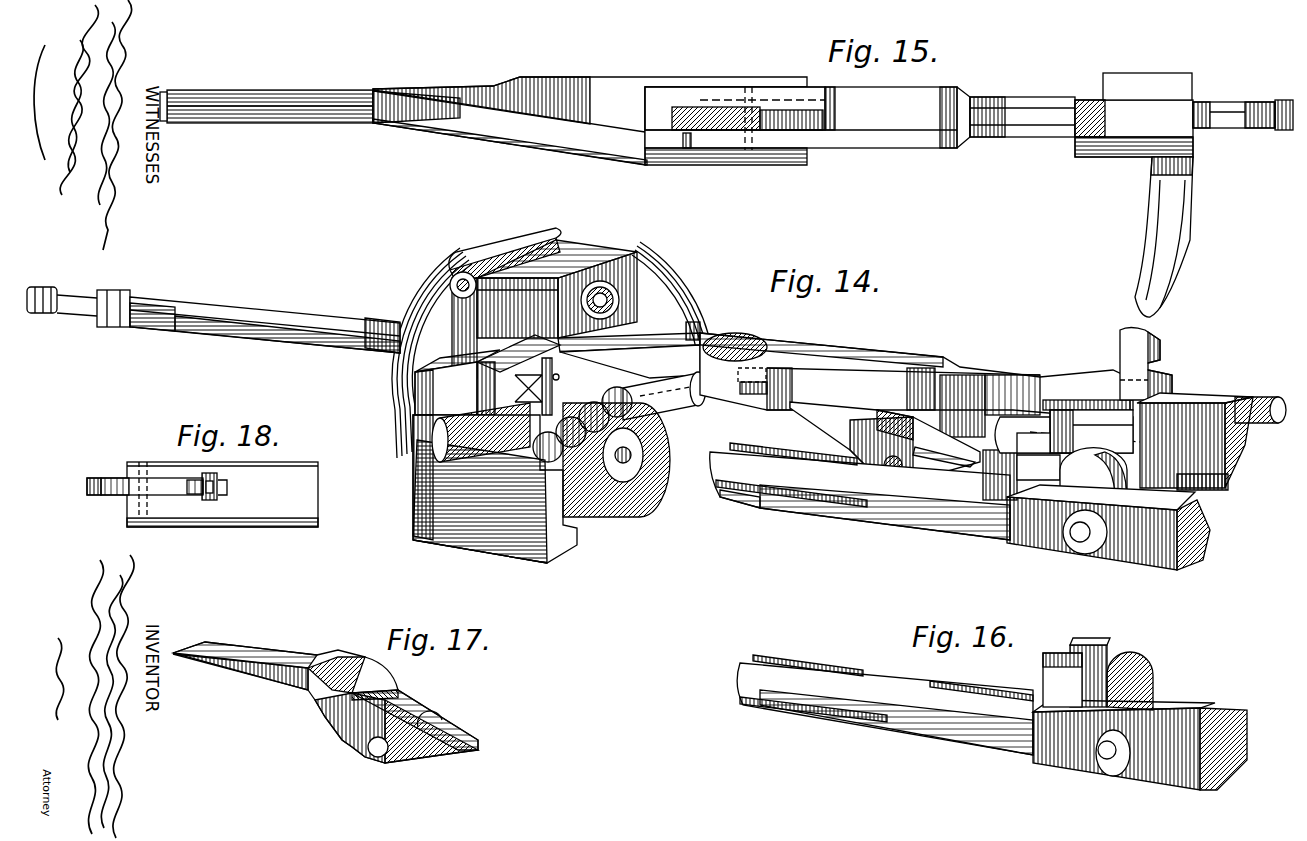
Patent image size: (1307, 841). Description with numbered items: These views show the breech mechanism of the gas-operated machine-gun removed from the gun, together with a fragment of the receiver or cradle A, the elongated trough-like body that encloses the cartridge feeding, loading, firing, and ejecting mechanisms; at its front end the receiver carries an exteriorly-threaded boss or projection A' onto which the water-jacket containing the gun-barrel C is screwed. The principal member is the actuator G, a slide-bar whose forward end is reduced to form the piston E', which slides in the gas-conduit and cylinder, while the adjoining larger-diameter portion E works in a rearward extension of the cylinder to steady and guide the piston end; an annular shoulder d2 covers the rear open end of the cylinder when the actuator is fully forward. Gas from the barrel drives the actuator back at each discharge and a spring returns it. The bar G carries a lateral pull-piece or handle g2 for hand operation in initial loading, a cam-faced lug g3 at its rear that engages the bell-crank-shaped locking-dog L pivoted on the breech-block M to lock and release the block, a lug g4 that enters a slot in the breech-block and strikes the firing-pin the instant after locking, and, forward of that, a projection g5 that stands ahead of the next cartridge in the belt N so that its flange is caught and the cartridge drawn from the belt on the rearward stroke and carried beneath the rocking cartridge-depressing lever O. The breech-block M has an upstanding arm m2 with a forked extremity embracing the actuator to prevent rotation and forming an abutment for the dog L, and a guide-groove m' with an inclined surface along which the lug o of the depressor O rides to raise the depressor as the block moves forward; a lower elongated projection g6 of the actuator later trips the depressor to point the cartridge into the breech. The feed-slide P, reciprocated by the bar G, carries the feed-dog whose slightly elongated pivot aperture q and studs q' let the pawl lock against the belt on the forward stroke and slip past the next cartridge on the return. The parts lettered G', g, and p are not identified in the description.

In FIG. 15, the adjoining guide portion of the actuator E is at (266, 92).
In FIG. 14, the adjoining guide portion of the actuator E is at (265, 313).
In FIG. 14, the piston E' is at (63, 289).
In FIG. 14, the annular shoulder d2 is at (103, 318).
In FIG. 15, the actuator G is at (590, 104).
In FIG. 14, the actuator G is at (915, 375).
In FIG. 14, the barrel socket G' is at (381, 321).
In FIG. 14, the receiver A is at (552, 350).
In FIG. 14, the threaded boss A' is at (518, 303).
In FIG. 14, the feed-slide P is at (690, 318).
In FIG. 18, the feed-slide P is at (297, 478).
In FIG. 15, the rod end g is at (1283, 108).
In FIG. 14, the rod end g is at (1245, 422).
In FIG. 15, the pull-piece or handle g2 is at (1191, 220).
In FIG. 15, the cam-faced lug g3 is at (1228, 118).
In FIG. 14, the cam-faced lug g3 is at (1225, 490).
In FIG. 15, the lug or projection g4 is at (1033, 112).
In FIG. 14, the lug or projection g4 is at (1008, 435).
In FIG. 15, the projection g5 is at (670, 140).
In FIG. 14, the projection g5 is at (715, 338).
In FIG. 14, the lower elongated projection g6 is at (760, 402).
In FIG. 14, the cartridge-belt N is at (417, 490).
In FIG. 14, the gun-barrel C is at (626, 478).
In FIG. 14, the breech-block M is at (923, 520).
In FIG. 16, the breech-block M is at (937, 740).
In FIG. 14, the guide-groove m' is at (793, 444).
In FIG. 16, the guide-groove m' is at (808, 657).
In FIG. 14, the upstanding arm m2 is at (1040, 440).
In FIG. 16, the upstanding arm m2 is at (1107, 662).
In FIG. 14, the locking-dog L is at (1203, 552).
In FIG. 16, the locking-dog L is at (1163, 715).
In FIG. 14, the cartridge-depressor O is at (840, 414).
In FIG. 17, the cartridge-depressor O is at (325, 691).
In FIG. 17, the lug o is at (322, 670).
In FIG. 18, the aperture q is at (129, 493).
In FIG. 18, the stud q' is at (178, 501).
In FIG. 18, the bracket p is at (220, 484).